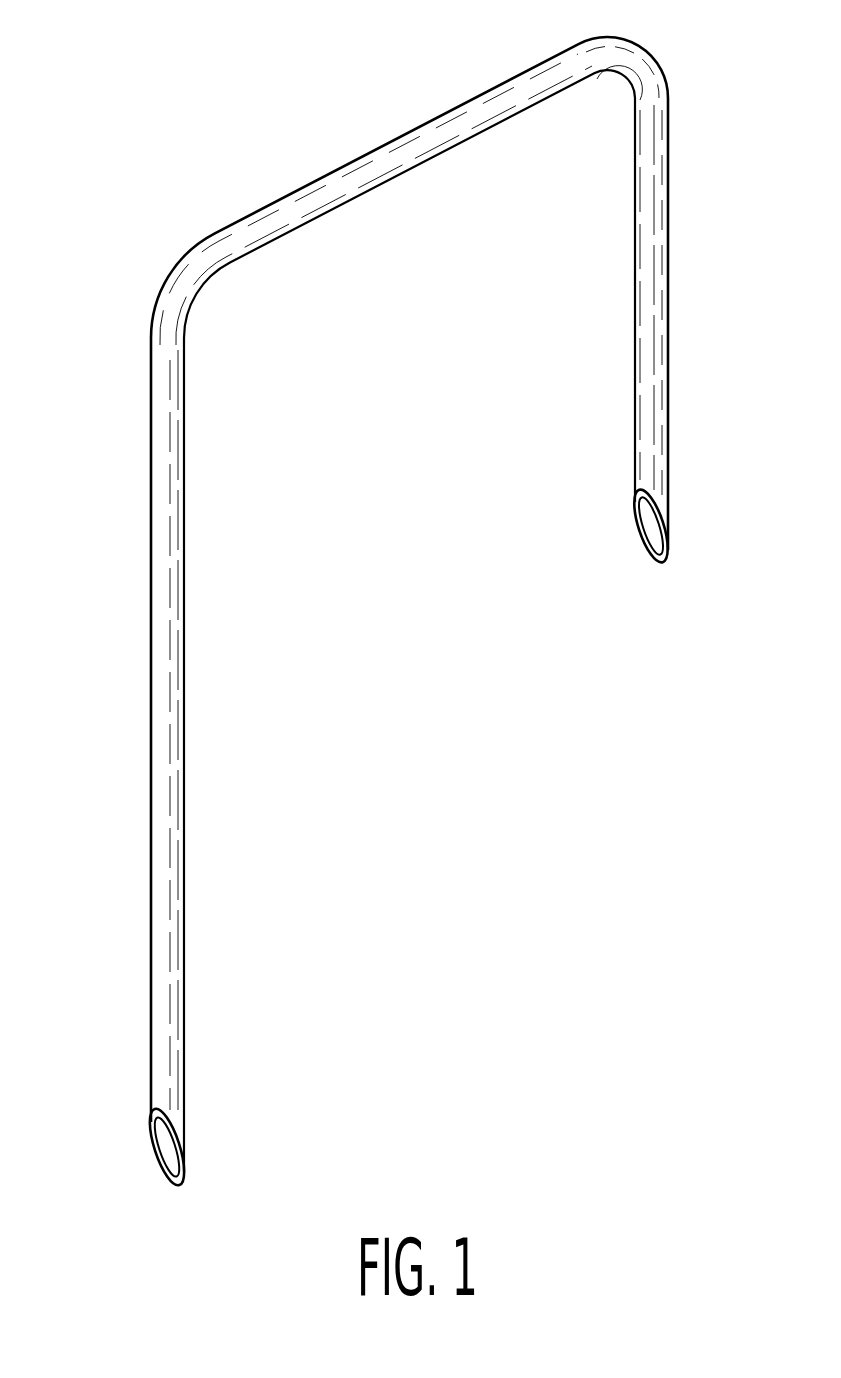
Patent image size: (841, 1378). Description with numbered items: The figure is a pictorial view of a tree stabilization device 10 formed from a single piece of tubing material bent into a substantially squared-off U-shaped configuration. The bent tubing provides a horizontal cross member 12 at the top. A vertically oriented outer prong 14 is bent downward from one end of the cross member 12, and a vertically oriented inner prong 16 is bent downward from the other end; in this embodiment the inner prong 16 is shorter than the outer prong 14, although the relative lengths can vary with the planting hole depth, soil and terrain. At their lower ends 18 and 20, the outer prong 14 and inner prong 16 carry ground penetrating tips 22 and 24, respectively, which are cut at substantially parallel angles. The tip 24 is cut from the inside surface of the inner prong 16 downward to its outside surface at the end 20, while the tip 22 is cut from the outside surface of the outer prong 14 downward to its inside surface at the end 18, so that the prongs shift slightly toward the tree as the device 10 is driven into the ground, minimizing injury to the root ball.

The tree stabilization device 10 is at (404, 618).
The cross member 12 is at (426, 140).
The outer prong 14 is at (162, 622).
The inner prong 16 is at (649, 247).
The end of outer prong 18 is at (146, 1159).
The end of inner prong 20 is at (640, 553).
The ground penetrating tip 22 is at (183, 1162).
The ground penetrating tip 24 is at (636, 512).